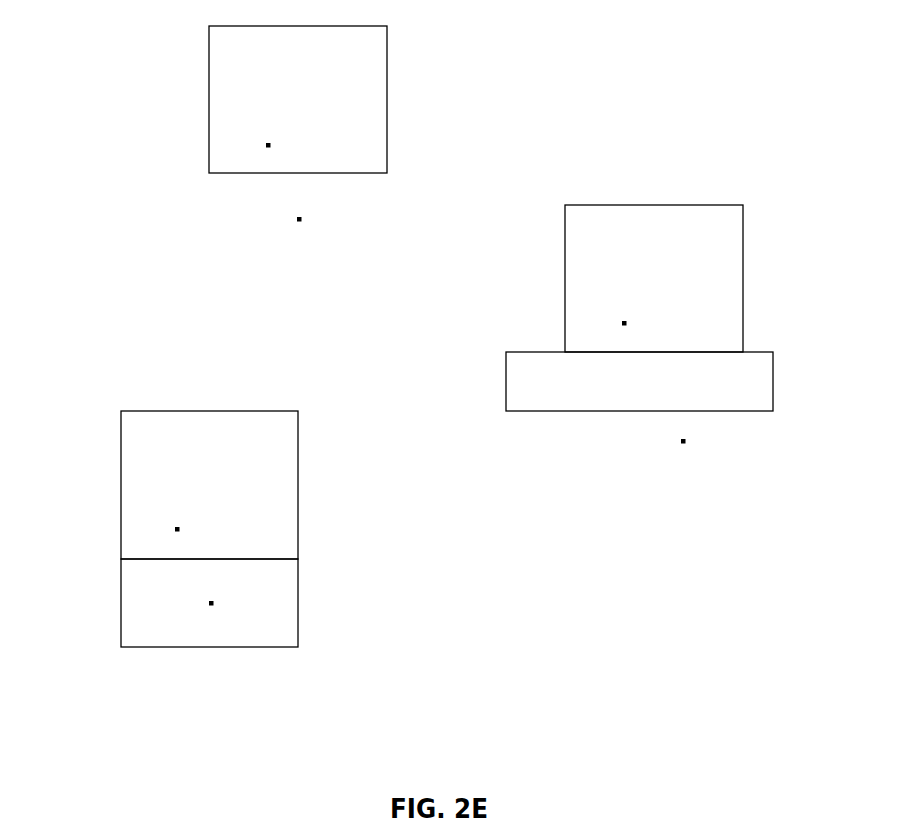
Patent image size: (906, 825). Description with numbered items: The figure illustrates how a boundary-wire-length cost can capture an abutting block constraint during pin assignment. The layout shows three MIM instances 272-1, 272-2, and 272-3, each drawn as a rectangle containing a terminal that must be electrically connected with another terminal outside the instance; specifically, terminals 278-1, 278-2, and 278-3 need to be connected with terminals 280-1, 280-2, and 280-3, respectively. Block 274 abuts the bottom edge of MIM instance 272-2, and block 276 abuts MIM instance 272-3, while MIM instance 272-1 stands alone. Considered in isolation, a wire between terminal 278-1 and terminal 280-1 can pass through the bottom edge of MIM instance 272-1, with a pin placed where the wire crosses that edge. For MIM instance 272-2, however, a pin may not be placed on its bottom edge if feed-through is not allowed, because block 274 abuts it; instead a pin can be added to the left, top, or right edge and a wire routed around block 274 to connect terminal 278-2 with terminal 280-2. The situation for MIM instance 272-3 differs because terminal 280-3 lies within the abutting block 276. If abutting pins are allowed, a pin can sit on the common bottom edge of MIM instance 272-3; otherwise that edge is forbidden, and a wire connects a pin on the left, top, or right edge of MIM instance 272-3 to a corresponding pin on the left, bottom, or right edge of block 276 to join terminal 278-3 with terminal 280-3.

The MIM instance 272-1 is at (298, 99).
The MIM instance 272-2 is at (654, 278).
The MIM instance 272-3 is at (209, 485).
The block 274 is at (520, 412).
The block 276 is at (150, 648).
The terminal 278-1 is at (259, 145).
The terminal 278-2 is at (618, 323).
The terminal 278-3 is at (172, 529).
The terminal 280-1 is at (298, 247).
The terminal 280-2 is at (684, 469).
The terminal 280-3 is at (222, 604).